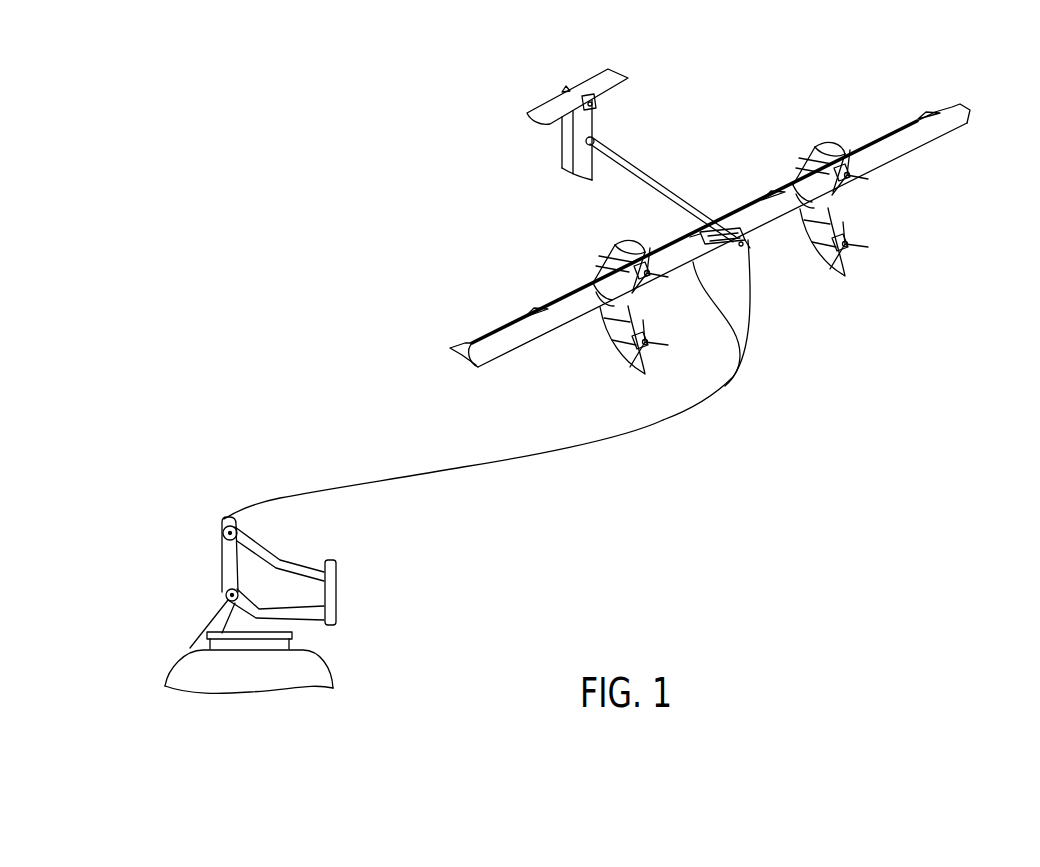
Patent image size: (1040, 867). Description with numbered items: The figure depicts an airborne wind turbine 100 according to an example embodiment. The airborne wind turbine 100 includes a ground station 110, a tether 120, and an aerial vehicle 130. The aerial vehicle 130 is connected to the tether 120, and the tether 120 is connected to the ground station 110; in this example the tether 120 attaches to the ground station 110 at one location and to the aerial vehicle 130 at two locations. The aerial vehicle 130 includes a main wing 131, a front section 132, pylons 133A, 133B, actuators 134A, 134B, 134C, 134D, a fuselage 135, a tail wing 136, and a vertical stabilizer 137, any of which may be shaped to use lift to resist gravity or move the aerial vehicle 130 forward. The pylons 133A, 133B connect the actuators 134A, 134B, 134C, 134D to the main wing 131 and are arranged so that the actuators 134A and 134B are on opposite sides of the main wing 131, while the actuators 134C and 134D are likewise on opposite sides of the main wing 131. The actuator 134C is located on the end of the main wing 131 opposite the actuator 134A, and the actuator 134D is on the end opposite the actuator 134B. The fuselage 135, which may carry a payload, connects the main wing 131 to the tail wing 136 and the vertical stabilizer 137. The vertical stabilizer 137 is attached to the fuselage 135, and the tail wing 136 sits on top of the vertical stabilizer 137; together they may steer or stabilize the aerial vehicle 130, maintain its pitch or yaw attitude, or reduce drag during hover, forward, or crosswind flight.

The airborne wind turbine 100 is at (223, 213).
The ground station 110 is at (228, 565).
The tether 120 is at (322, 484).
The aerial vehicle 130 is at (568, 63).
The main wing 131 is at (762, 216).
The front section 132 is at (735, 249).
The pylon 133A is at (811, 155).
The pylon 133B is at (608, 255).
The actuator 134A is at (859, 183).
The actuator 134B is at (860, 251).
The actuator 134C is at (655, 282).
The actuator 134D is at (652, 350).
The fuselage 135 is at (640, 174).
The tail wing 136 is at (625, 72).
The vertical stabilizer 137 is at (583, 173).